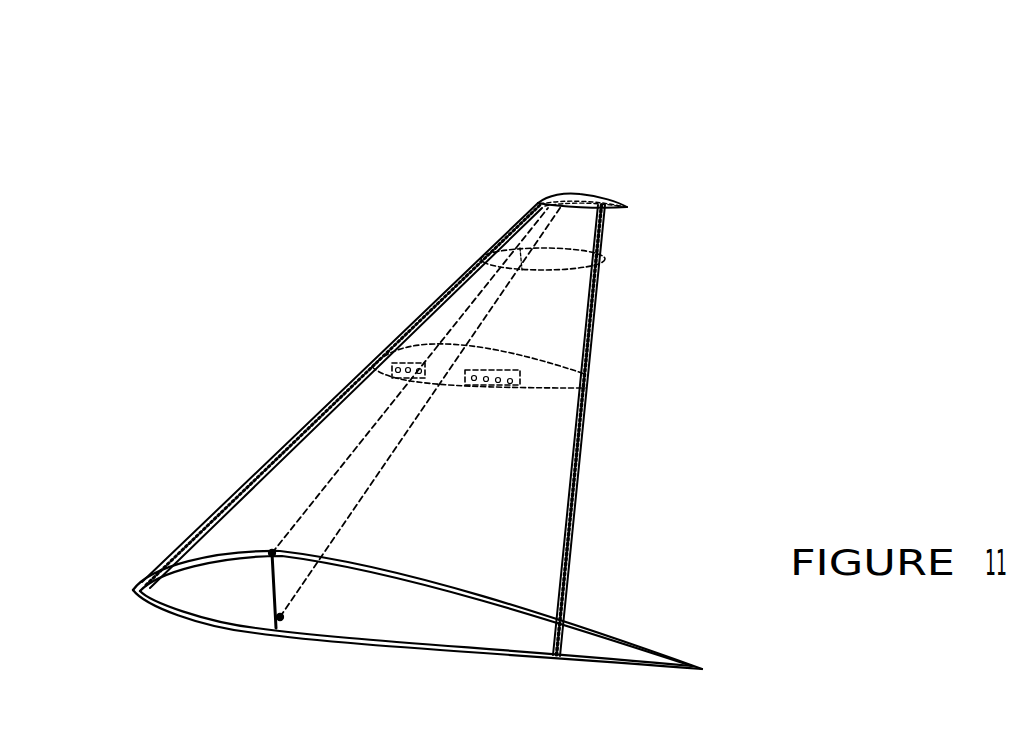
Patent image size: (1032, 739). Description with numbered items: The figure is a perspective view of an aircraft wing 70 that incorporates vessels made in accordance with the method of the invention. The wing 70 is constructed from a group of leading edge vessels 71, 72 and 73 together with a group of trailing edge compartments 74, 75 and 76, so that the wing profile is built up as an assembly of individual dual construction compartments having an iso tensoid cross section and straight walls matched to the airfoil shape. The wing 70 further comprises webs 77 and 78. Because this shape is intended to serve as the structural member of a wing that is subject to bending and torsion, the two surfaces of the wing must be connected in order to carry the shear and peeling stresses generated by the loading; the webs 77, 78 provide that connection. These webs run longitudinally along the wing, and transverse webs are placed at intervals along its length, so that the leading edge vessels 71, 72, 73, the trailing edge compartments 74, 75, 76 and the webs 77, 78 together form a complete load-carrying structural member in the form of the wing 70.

The aircraft wing 70 is at (608, 168).
The leading edge vessel 71 is at (255, 495).
The leading edge vessel 72 is at (455, 298).
The leading edge vessel 73 is at (528, 228).
The trailing edge compartment 74 is at (545, 505).
The trailing edge compartment 75 is at (572, 316).
The trailing edge compartment 76 is at (588, 220).
The web 77 is at (570, 372).
The web 78 is at (555, 258).